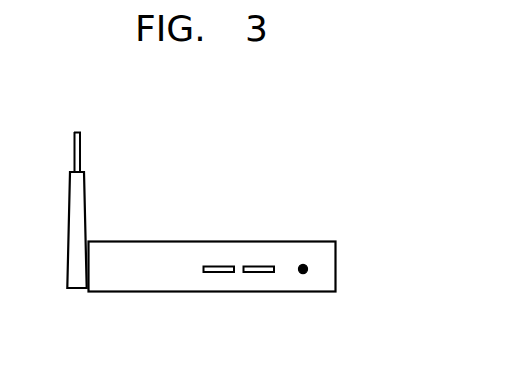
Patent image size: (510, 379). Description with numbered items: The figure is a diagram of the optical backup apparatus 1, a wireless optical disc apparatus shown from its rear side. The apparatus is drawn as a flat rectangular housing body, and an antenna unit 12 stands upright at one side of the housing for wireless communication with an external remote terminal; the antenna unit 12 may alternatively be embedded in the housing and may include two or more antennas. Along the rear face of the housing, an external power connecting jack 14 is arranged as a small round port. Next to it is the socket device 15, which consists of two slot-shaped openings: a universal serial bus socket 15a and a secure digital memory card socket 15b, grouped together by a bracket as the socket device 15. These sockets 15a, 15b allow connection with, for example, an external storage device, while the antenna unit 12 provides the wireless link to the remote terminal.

The optical backup apparatus 1 is at (349, 164).
The antenna unit 12 is at (70, 214).
The external power connecting jack 14 is at (303, 274).
The socket device 15 is at (237, 318).
The universal serial bus (USB) socket 15a is at (214, 272).
The secure digital (SD) memory card socket 15b is at (258, 272).